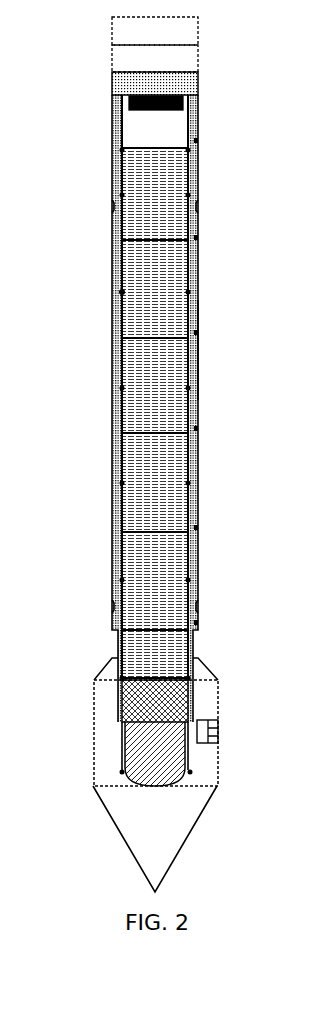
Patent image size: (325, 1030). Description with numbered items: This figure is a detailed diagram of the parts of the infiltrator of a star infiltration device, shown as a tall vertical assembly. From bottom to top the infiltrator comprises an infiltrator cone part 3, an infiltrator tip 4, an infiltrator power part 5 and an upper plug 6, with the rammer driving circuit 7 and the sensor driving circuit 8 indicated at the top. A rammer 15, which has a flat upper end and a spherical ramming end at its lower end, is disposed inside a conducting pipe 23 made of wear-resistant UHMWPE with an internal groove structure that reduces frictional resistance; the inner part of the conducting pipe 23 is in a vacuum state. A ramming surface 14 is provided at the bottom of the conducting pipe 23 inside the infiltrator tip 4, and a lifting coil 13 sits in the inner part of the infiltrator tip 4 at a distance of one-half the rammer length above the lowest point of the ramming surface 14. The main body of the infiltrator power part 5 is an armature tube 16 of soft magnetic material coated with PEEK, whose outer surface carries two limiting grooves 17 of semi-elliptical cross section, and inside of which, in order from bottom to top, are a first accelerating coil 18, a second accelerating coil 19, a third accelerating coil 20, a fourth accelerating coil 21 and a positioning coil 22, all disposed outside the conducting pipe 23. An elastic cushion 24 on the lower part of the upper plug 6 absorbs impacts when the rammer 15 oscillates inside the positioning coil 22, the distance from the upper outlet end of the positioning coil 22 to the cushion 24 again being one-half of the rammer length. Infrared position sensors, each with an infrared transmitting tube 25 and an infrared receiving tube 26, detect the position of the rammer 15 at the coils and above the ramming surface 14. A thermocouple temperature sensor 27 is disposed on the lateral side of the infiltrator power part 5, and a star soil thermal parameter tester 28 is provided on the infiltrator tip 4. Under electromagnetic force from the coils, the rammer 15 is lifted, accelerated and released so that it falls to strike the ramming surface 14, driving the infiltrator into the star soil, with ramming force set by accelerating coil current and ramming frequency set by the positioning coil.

The infiltrator cone part 3 is at (135, 815).
The infiltrator tip 4 is at (95, 673).
The infiltrator power part 5 is at (102, 413).
The upper plug 6 is at (115, 90).
The rammer driving circuit 7 is at (115, 62).
The sensor driving circuit 8 is at (118, 32).
The lifting coil 13 is at (120, 647).
The ramming surface 14 is at (155, 787).
The rammer 15 is at (123, 767).
The armature tube 16 is at (198, 365).
The limiting groove 17 is at (258, 235).
The first accelerating coil 18 is at (118, 565).
The second accelerating coil 19 is at (117, 462).
The third accelerating coil 20 is at (118, 370).
The fourth accelerating coil 21 is at (120, 246).
The positioning coil 22 is at (121, 192).
The conducting pipe 23 is at (252, 143).
The cushion 24 is at (247, 78).
The infrared transmitting tube 25 is at (255, 177).
The infrared receiving tube 26 is at (122, 291).
The thermocouple temperature sensor 27 is at (197, 428).
The star soil thermal parameter tester 28 is at (222, 738).